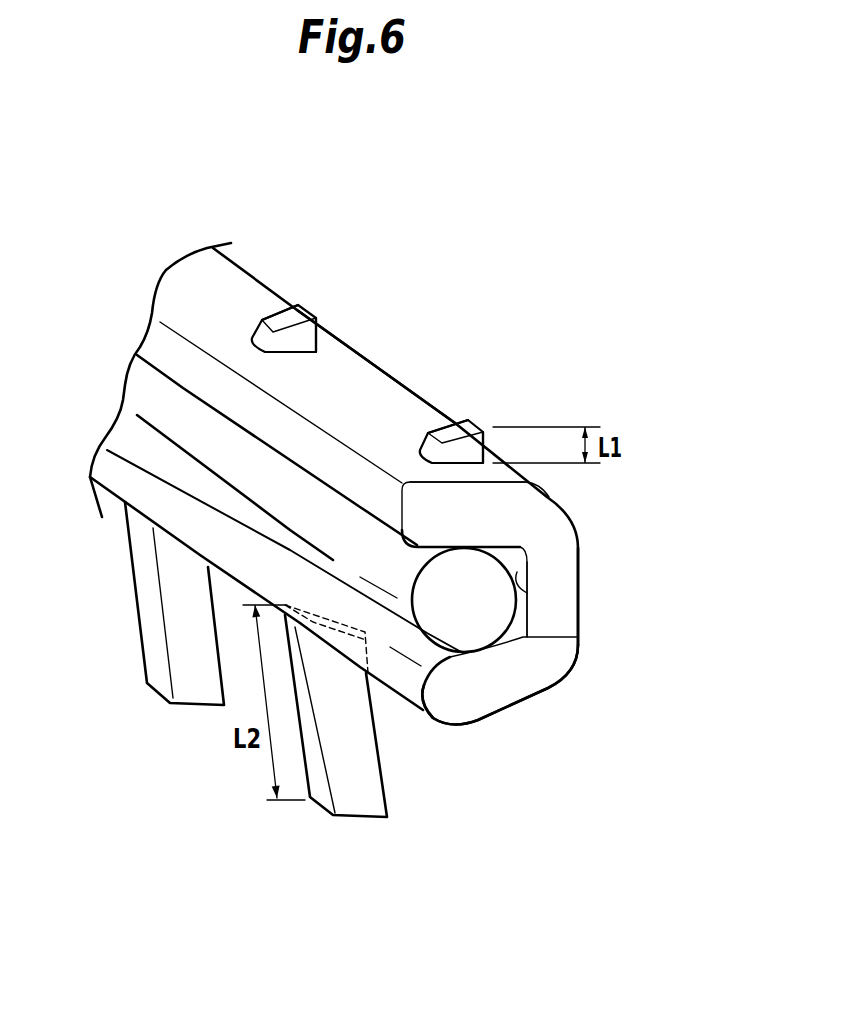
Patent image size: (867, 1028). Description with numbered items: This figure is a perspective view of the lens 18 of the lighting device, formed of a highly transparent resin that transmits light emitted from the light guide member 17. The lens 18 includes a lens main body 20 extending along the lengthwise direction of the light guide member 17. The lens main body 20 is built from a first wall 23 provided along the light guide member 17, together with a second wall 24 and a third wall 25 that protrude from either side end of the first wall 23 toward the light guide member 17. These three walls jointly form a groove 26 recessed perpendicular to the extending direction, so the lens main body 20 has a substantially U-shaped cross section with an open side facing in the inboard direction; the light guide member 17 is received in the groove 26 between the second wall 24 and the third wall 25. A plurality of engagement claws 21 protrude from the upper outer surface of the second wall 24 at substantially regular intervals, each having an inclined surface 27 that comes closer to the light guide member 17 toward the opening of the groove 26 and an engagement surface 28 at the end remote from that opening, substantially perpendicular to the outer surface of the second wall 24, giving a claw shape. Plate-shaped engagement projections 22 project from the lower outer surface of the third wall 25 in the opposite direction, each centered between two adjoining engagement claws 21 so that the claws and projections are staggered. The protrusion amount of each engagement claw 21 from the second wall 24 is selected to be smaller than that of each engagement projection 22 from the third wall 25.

The light guide member 17 is at (473, 620).
The lens 18 is at (606, 494).
The lens main body 20 is at (553, 536).
The engagement claw 21 is at (297, 306).
The engagement projection 22 is at (190, 692).
The first wall 23 is at (553, 614).
The second wall 24 is at (352, 375).
The third wall 25 is at (412, 704).
The groove 26 is at (527, 585).
The inclined surface 27 is at (278, 317).
The engagement surface 28 is at (330, 333).